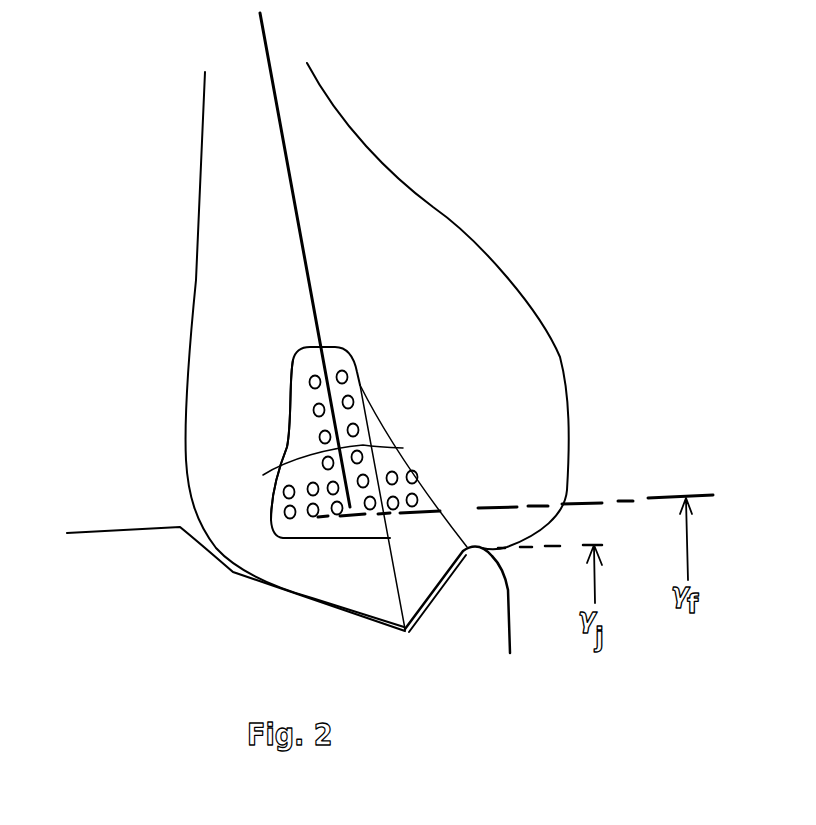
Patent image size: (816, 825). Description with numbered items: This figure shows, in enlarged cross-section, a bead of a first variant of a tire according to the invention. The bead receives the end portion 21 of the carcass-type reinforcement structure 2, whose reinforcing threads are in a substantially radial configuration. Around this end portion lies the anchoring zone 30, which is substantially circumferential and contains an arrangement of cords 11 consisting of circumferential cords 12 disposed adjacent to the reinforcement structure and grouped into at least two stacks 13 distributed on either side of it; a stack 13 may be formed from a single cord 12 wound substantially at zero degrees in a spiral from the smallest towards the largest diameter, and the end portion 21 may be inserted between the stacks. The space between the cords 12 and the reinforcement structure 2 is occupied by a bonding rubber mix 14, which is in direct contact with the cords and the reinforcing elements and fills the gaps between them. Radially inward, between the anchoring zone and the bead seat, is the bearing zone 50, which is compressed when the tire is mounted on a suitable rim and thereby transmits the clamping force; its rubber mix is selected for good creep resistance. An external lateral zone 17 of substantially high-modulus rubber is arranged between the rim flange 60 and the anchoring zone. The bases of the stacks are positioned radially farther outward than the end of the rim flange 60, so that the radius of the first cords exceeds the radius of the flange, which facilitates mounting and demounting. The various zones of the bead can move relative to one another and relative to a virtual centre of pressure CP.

The reinforcement structure 2 is at (298, 222).
The arrangement of cords 11 is at (265, 427).
The circumferential cords 12 is at (345, 375).
The stack 13 is at (338, 520).
The bonding rubber mix 14 is at (263, 475).
The external lateral zone 17 is at (440, 552).
The end portion of the reinforcement structure 21 is at (370, 450).
The anchoring zone 30 is at (325, 437).
The bearing zone 50 is at (325, 599).
The rim flange 60 is at (483, 577).
The virtual centre of pressure CP is at (403, 448).